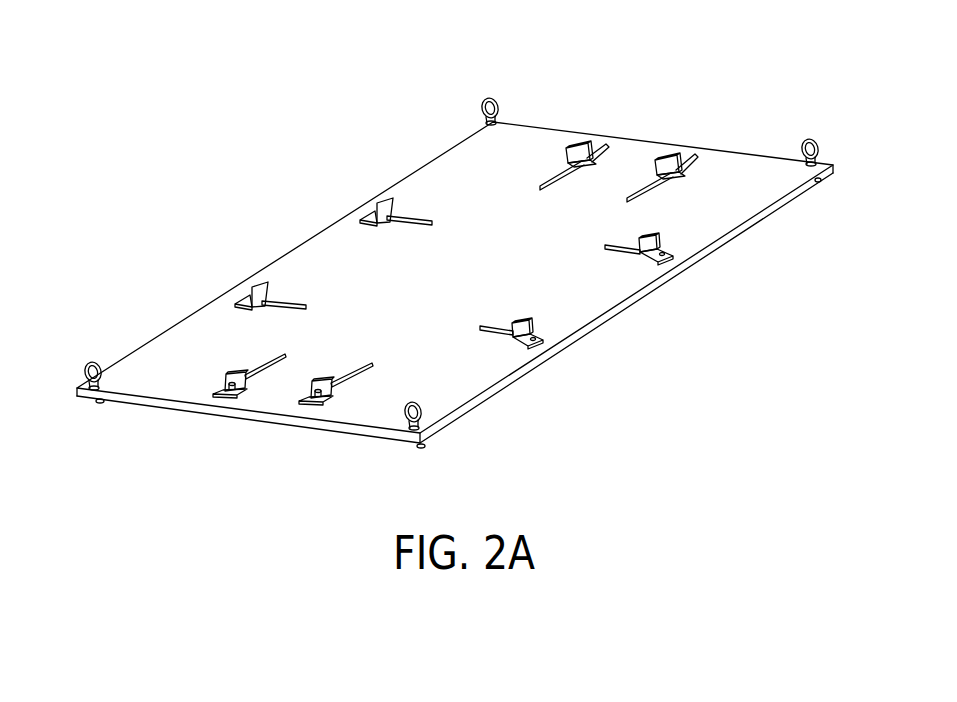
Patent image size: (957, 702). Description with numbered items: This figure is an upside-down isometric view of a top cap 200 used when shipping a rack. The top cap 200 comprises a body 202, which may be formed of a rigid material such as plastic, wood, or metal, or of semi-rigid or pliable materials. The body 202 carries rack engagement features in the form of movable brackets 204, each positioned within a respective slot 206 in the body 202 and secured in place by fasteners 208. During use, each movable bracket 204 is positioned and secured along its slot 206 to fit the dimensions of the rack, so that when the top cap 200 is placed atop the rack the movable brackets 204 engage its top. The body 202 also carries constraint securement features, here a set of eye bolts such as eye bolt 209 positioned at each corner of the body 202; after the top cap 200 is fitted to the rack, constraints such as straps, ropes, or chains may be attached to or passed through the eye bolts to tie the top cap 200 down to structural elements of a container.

The top cap 200 is at (252, 172).
The body 202 is at (521, 148).
The movable bracket 204 is at (640, 238).
The slot 206 is at (622, 253).
The fastener 208 is at (666, 256).
The eye bolt 209 is at (820, 152).